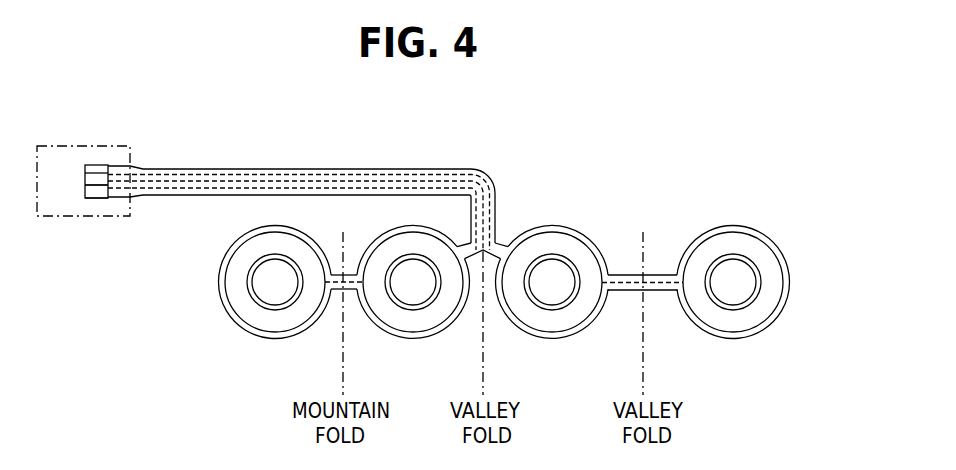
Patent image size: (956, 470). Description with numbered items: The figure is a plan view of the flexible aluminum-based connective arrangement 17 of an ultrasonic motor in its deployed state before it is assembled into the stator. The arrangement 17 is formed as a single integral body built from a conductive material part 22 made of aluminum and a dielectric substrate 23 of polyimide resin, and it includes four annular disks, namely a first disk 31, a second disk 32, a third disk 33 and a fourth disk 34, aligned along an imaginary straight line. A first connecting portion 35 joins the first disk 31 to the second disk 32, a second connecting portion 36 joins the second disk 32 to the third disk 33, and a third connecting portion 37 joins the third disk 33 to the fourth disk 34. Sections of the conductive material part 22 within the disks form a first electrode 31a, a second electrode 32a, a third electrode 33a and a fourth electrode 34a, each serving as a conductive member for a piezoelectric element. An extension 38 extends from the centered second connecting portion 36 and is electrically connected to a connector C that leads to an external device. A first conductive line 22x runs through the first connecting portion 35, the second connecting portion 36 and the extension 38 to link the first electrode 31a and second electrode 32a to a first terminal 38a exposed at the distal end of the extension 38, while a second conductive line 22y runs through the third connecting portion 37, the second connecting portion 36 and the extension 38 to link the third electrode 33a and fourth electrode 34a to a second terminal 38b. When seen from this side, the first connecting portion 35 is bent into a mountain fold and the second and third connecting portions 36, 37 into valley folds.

The connector C is at (87, 143).
The flexible aluminum-based connective arrangement 17 is at (541, 136).
The conductive material part 22 is at (280, 343).
The first conductive line 22x is at (417, 196).
The second conductive line 22y is at (427, 172).
The dielectric substrate 23 is at (244, 346).
The first disk 31 is at (245, 313).
The first electrode 31a is at (237, 300).
The second disk 32 is at (413, 307).
The second electrode 32a is at (430, 337).
The third disk 33 is at (552, 308).
The third electrode 33a is at (566, 329).
The fourth disk 34 is at (733, 305).
The fourth electrode 34a is at (748, 325).
The first connecting portion 35 is at (334, 270).
The second connecting portion 36 is at (503, 244).
The third connecting portion 37 is at (647, 274).
The extension 38 is at (301, 182).
The first terminal 38a is at (97, 192).
The second terminal 38b is at (95, 168).